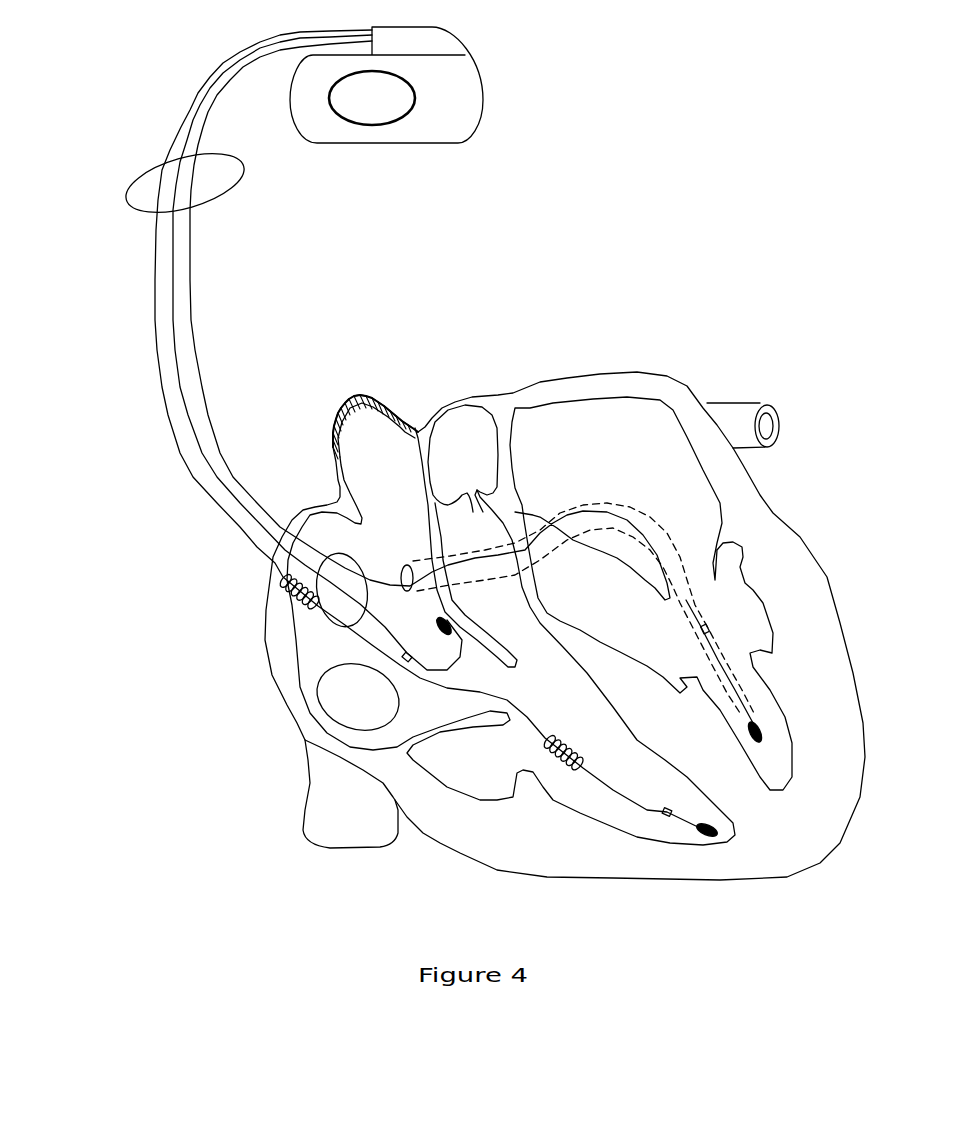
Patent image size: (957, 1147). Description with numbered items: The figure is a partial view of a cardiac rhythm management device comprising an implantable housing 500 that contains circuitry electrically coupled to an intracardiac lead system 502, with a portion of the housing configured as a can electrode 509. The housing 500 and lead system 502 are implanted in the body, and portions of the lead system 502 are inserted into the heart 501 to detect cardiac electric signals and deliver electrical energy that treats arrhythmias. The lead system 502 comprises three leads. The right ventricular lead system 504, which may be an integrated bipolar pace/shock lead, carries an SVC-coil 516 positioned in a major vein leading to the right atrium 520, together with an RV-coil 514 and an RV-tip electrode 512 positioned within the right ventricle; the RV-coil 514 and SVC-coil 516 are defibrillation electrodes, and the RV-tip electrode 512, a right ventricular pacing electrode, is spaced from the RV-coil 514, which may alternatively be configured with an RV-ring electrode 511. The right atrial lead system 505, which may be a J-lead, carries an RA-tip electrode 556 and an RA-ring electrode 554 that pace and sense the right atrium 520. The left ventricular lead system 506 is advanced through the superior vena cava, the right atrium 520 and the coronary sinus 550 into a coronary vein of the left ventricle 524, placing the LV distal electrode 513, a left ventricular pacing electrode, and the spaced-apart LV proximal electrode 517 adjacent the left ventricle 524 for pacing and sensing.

The implantable housing 500 is at (440, 98).
The heart 501 is at (627, 397).
The intracardiac lead system 502 is at (158, 168).
The right ventricular lead system 504 is at (155, 330).
The right atrial lead system 505 is at (175, 360).
The left ventricular lead system 506 is at (200, 393).
The can electrode 509 is at (383, 110).
The RV-ring electrode 511 is at (663, 813).
The RV-tip electrode 512 is at (700, 823).
The LV distal electrode 513 is at (767, 735).
The RV-coil 514 is at (543, 743).
The SVC-coil 516 is at (278, 583).
The LV proximal electrode 517 is at (711, 627).
The right atrium 520 is at (351, 654).
The left ventricle 524 is at (677, 642).
The coronary sinus 550 is at (412, 565).
The RA-ring electrode 554 is at (425, 640).
The RA-tip electrode 556 is at (440, 620).